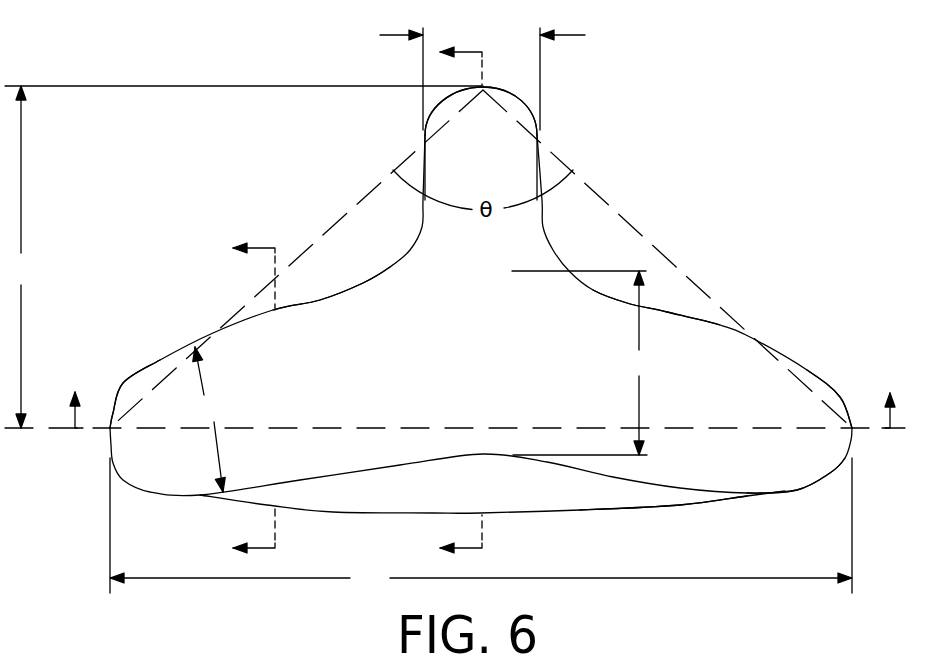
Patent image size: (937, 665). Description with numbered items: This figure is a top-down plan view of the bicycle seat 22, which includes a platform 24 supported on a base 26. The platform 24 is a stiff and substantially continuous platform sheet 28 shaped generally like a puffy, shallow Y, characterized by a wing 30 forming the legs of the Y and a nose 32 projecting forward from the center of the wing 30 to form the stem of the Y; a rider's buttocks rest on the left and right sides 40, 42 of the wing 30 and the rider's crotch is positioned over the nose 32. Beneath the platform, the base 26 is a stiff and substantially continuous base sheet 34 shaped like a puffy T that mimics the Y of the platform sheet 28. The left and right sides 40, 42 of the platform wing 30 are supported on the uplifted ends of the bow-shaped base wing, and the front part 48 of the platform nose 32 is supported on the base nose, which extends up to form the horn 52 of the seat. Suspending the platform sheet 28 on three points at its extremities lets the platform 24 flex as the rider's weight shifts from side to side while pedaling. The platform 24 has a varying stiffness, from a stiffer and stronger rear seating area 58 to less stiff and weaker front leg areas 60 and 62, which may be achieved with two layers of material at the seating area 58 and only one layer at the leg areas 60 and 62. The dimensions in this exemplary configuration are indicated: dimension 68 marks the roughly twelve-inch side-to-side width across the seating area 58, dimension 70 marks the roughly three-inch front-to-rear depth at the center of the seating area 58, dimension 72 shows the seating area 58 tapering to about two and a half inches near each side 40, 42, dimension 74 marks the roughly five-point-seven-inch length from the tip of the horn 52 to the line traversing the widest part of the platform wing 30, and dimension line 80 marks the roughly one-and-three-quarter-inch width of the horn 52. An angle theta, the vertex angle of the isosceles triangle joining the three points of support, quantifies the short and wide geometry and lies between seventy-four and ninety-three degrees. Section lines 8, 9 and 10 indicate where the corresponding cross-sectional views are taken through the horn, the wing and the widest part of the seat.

The seat 22 is at (705, 142).
The platform 24 is at (435, 228).
The nose 32 is at (530, 229).
The base 26 is at (578, 498).
The platform sheet 28 is at (485, 458).
The wing 30 is at (797, 473).
The base sheet 34 is at (630, 510).
The left side of platform wing 40 is at (137, 390).
The right side of platform wing 42 is at (817, 377).
The front part of platform nose 48 is at (497, 87).
The horn 52 is at (453, 162).
The rear seating area 58 is at (303, 398).
The front leg area 60 is at (319, 320).
The front leg area 62 is at (693, 327).
The dimension 68 is at (481, 525).
The dimension 70 is at (583, 363).
The dimension 72 is at (209, 419).
The dimension 74 is at (244, 257).
The dimension line 80 is at (467, 76).
The section line 8- 8 is at (470, 300).
The section line 9- 9 is at (263, 397).
The section line 10- 10 is at (483, 425).